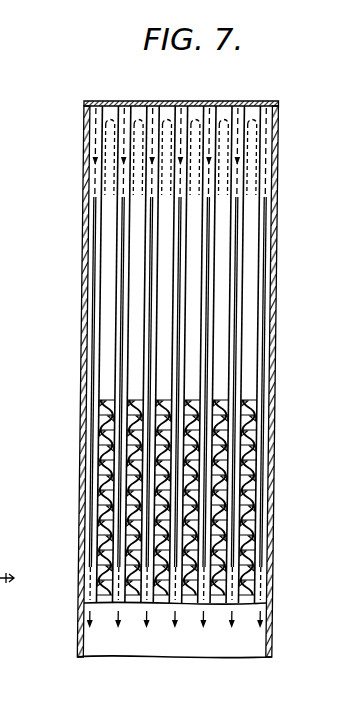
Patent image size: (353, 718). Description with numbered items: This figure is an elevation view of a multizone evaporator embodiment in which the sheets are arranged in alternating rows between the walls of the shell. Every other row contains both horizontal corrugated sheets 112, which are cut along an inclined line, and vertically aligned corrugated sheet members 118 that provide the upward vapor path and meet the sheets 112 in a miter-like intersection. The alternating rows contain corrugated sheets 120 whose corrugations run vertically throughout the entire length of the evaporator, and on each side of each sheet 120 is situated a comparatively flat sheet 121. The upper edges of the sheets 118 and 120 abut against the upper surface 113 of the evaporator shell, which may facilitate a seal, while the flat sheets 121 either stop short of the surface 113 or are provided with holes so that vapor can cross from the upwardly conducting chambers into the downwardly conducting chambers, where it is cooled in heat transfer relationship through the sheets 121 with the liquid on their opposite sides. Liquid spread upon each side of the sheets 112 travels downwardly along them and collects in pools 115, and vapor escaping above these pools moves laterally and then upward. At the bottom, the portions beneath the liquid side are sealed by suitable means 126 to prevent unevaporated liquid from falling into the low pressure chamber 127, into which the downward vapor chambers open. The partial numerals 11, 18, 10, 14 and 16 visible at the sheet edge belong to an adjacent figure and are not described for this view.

The upper surface of the evaporator shell 113 is at (166, 104).
The corrugated sheet 120 is at (123, 111).
The comparatively flat sheet 121 is at (113, 205).
The vertical corrugated sheet member 118 is at (163, 245).
The corrugated sheet 112 is at (130, 452).
The pool 115 is at (108, 499).
The liquid side seal 126 is at (243, 602).
The low pressure chamber 127 is at (203, 658).
The adjacent figure numeral 11 is at (12, 143).
The adjacent figure numeral 18 is at (12, 208).
The adjacent figure numeral 10 is at (12, 278).
The adjacent figure numeral 14 is at (12, 399).
The adjacent figure numeral 16 is at (12, 528).